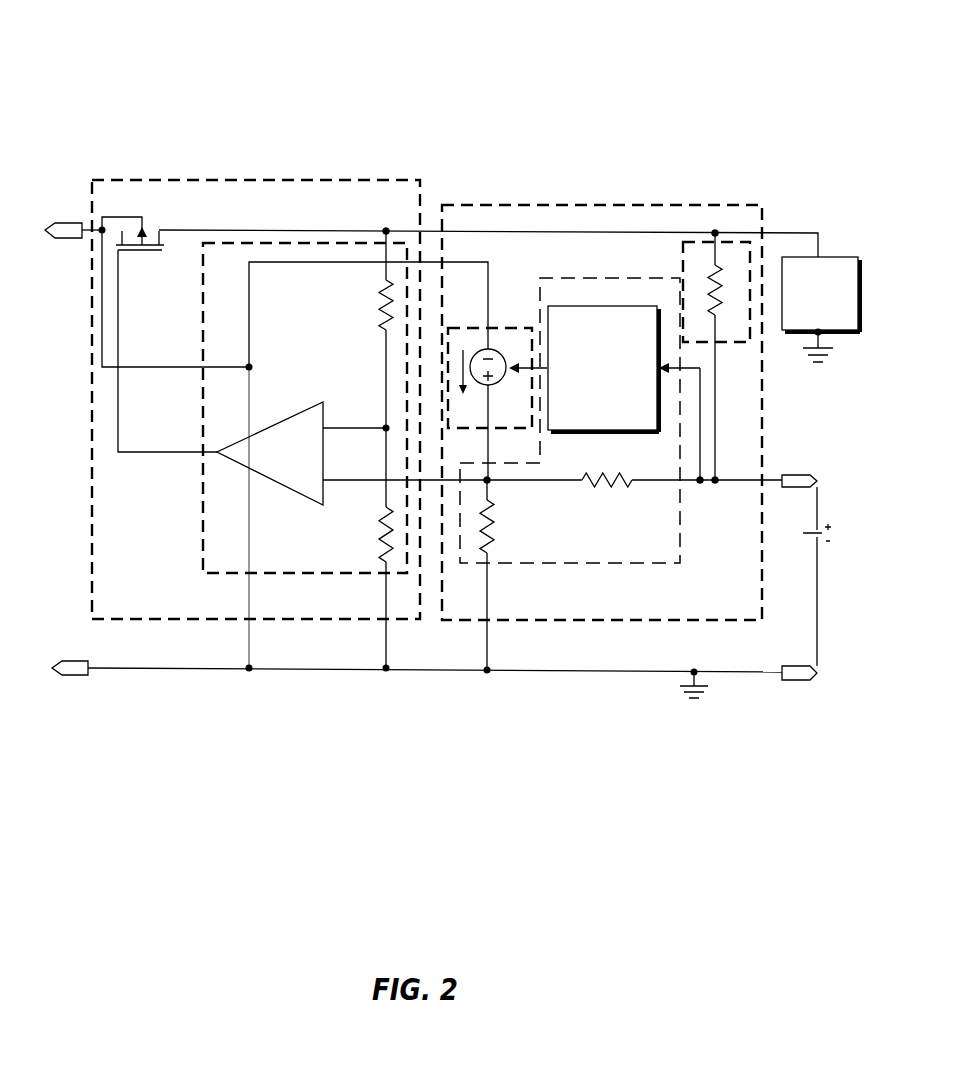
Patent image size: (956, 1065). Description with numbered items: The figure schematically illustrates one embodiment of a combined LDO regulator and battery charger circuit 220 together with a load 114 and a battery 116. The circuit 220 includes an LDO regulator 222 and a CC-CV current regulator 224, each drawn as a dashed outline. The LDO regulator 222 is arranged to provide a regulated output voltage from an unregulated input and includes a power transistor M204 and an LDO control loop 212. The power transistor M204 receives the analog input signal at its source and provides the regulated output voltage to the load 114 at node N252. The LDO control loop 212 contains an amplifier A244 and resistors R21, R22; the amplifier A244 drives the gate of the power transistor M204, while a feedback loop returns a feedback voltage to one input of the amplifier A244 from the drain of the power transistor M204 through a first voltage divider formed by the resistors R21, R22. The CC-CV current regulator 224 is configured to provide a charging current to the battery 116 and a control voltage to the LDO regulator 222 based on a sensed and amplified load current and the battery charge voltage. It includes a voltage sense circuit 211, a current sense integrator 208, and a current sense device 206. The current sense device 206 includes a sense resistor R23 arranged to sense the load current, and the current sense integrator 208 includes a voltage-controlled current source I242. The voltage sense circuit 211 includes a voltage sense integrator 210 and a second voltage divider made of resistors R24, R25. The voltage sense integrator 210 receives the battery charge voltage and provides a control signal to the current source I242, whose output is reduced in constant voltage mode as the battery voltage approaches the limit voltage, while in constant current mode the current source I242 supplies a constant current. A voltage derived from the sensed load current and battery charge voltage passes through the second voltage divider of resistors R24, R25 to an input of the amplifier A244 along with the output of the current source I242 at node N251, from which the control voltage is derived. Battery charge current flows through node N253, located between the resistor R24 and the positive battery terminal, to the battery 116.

The combined LDO regulator and battery charger circuit 220 is at (630, 73).
The LDO regulator 222 is at (243, 180).
The CC-CV current regulator 224 is at (533, 205).
The LDO control loop 212 is at (275, 575).
The power transistor M204 is at (158, 252).
The amplifier A244 is at (288, 488).
The resistor R21 is at (370, 329).
The resistor R22 is at (368, 548).
The sense resistor R23 is at (726, 356).
The resistor R24 is at (607, 493).
The resistor R25 is at (503, 575).
The node N252 is at (388, 229).
The node N251 is at (493, 484).
The node N253 is at (700, 485).
The current sense device 206 is at (683, 242).
The current sense integrator 208 is at (482, 428).
The voltage-controlled current source I242 is at (505, 352).
The voltage sense integrator 210 is at (604, 393).
The voltage sense circuit 211 is at (553, 565).
The load 114 is at (821, 309).
The battery 116 is at (833, 537).